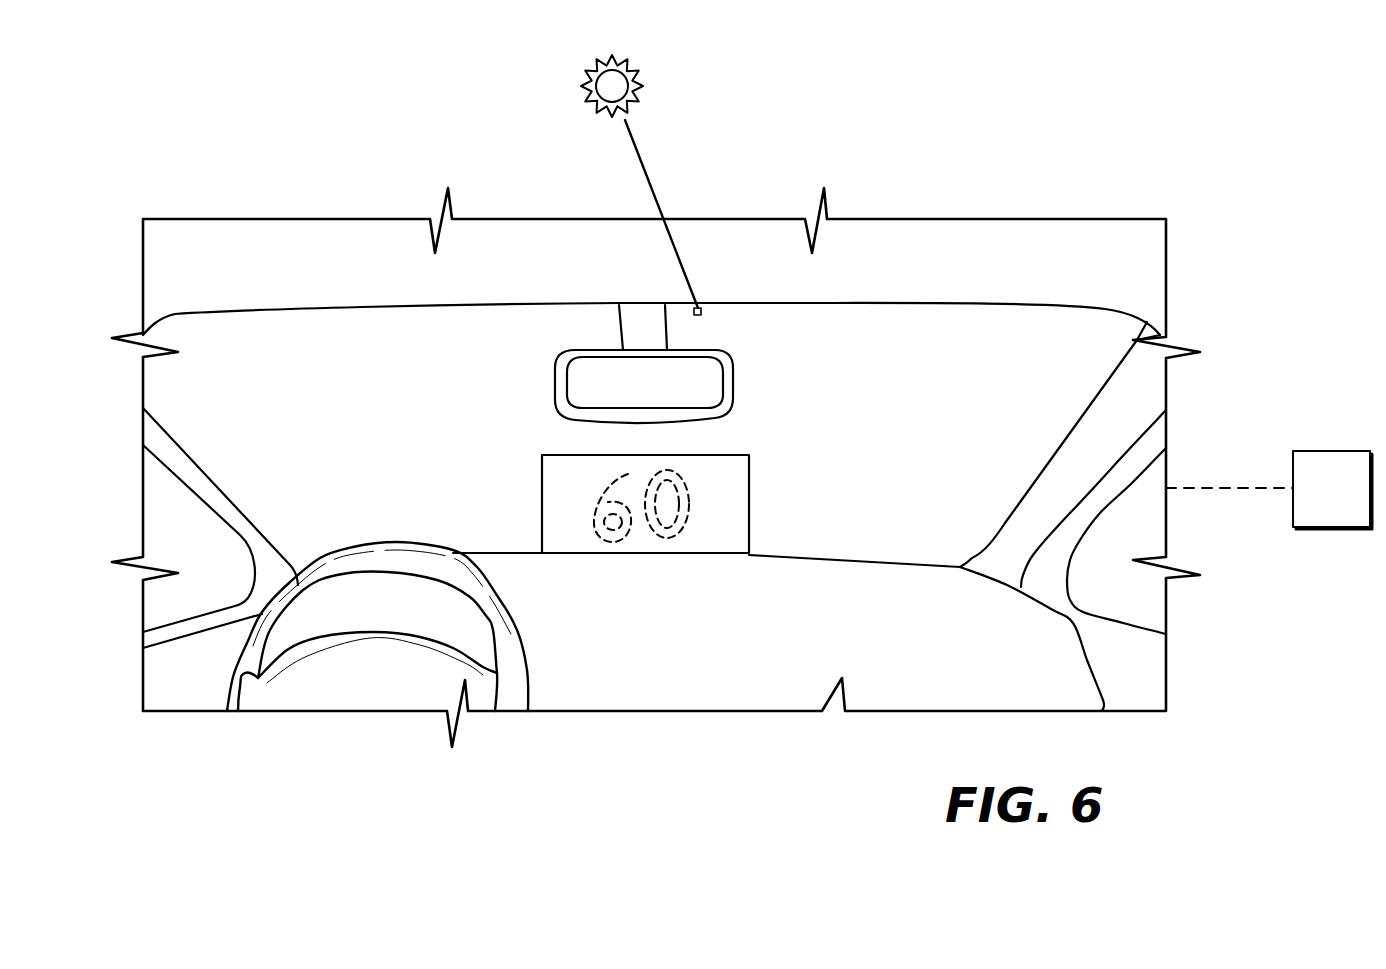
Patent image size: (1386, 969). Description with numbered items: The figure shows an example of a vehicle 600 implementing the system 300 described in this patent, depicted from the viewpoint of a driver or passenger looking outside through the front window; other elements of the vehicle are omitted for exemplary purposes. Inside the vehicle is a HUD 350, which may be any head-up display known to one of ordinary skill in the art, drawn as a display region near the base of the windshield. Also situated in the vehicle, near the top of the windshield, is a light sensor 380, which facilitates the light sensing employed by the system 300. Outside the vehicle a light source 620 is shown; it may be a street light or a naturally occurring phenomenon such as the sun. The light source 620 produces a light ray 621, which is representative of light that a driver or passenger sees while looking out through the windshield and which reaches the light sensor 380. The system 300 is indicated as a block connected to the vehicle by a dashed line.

The vehicle 600 is at (287, 219).
The light source 620 is at (648, 62).
The light ray 621 is at (653, 193).
The light sensor 380 is at (703, 311).
The HUD 350 is at (749, 490).
The system 300 is at (1346, 501).